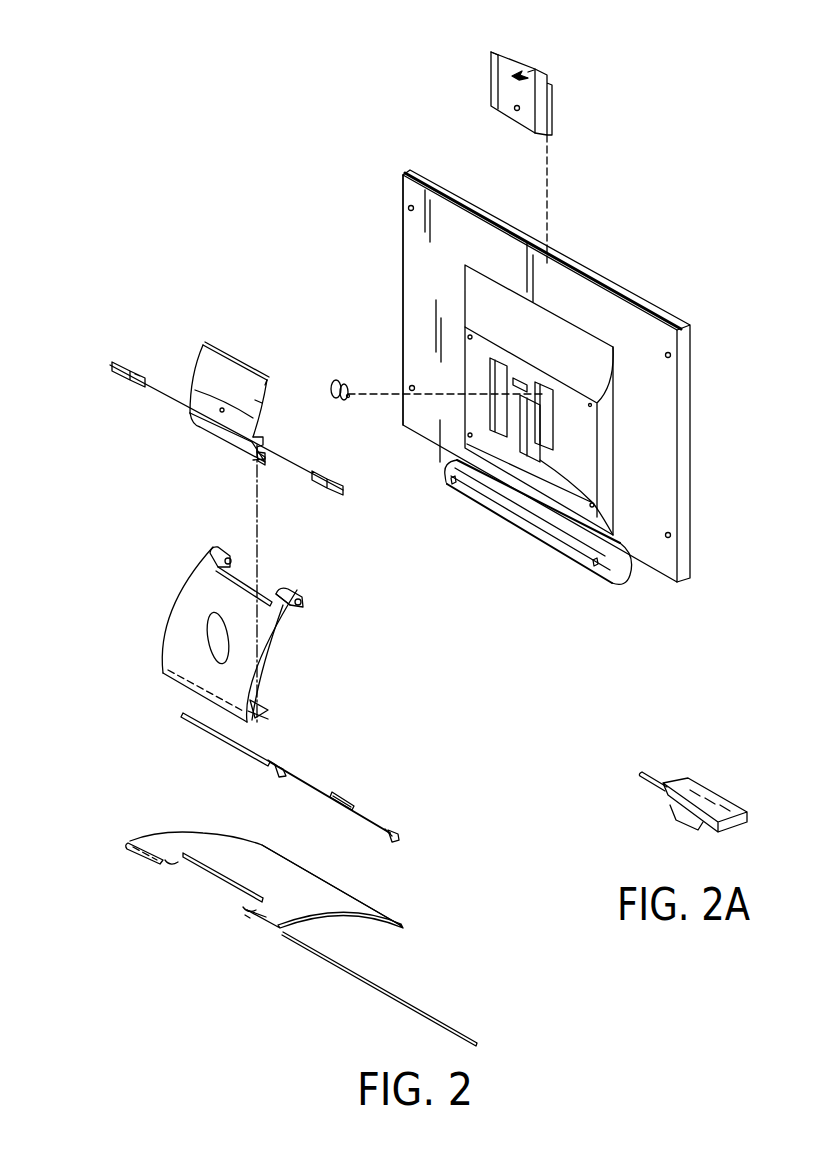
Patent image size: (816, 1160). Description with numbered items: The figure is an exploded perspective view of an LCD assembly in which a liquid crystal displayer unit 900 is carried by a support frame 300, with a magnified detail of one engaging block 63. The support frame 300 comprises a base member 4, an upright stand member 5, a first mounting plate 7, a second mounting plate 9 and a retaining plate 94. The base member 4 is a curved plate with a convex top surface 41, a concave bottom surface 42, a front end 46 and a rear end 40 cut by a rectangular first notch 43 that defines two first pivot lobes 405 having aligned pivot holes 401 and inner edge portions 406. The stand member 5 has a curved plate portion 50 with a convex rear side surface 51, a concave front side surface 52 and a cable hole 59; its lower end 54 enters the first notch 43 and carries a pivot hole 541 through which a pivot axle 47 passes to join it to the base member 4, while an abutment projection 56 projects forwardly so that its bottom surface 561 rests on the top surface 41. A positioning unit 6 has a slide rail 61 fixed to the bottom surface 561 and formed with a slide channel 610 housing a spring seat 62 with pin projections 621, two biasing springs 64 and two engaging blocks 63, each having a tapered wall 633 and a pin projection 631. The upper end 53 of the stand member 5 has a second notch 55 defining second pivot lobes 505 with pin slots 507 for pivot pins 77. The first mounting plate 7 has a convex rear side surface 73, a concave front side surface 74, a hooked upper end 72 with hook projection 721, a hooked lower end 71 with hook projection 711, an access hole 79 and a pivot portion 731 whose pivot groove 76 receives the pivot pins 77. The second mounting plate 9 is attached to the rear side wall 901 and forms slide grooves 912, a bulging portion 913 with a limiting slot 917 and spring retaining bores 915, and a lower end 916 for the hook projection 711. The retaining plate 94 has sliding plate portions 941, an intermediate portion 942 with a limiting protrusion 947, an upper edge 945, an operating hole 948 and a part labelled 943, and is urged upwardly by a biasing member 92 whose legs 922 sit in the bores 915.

In FIG. 2, the base member 4 is at (418, 944).
In FIG. 2, the rear end 40 is at (135, 851).
In FIG. 2, the convex top surface 41 is at (228, 835).
In FIG. 2, the concave bottom surface 42 is at (340, 918).
In FIG. 2, the first notch 43 is at (195, 885).
In FIG. 2, the front end 46 is at (380, 905).
In FIG. 2, the pivot axle 47 is at (381, 990).
In FIG. 2, the pivot holes 401 is at (247, 917).
In FIG. 2, the first pivot lobes 405 is at (265, 917).
In FIG. 2, the inner edge portions 406 is at (240, 900).
In FIG. 2, the stand member 5 is at (167, 604).
In FIG. 2, the curved plate portion 50 is at (270, 640).
In FIG. 2, the convex rear side surface 51 is at (205, 580).
In FIG. 2, the concave front side surface 52 is at (263, 665).
In FIG. 2, the upper end 53 is at (285, 590).
In FIG. 2, the lower end 54 is at (178, 690).
In FIG. 2, the second notch 55 is at (262, 592).
In FIG. 2, the abutment projection 56 is at (266, 705).
In FIG. 2, the cable hole 59 is at (208, 636).
In FIG. 2, the second pivot lobes 505 is at (190, 533).
In FIG. 2, the pin slots 507 is at (301, 600).
In FIG. 2, the pivot hole 541 is at (168, 684).
In FIG. 2, the bottom surface 561 is at (262, 713).
In FIG. 2, the support frame 300 is at (112, 646).
In FIG. 2, the positioning unit 6 is at (352, 785).
In FIG. 2, the slide rail 61 is at (230, 738).
In FIG. 2, the spring seat 62 is at (352, 803).
In FIG. 2, the engaging blocks 63 is at (400, 836).
In FIG. 2A, the engaging blocks 63 is at (708, 801).
In FIG. 2, the biasing springs 64 is at (365, 820).
In FIG. 2, the slide channel 610 is at (271, 768).
In FIG. 2, the pin projection 621 is at (350, 815).
In FIG. 2, the pin projection 631 is at (392, 840).
In FIG. 2A, the pin projection 631 is at (645, 781).
In FIG. 2A, the tapered wall 633 is at (703, 831).
In FIG. 2, the first mounting plate 7 is at (198, 341).
In FIG. 2, the hooked lower end 71 is at (224, 446).
In FIG. 2, the hooked upper end 72 is at (222, 364).
In FIG. 2, the convex rear side surface 73 is at (208, 378).
In FIG. 2, the concave front side surface 74 is at (258, 404).
In FIG. 2, the pivot groove 76 is at (262, 448).
In FIG. 2, the pivot pins 77 is at (128, 372).
In FIG. 2, the access hole 79 is at (219, 412).
In FIG. 2, the forward hook projection 711 is at (266, 462).
In FIG. 2, the forward hook projection 721 is at (268, 381).
In FIG. 2, the pivot portion 731 is at (210, 432).
In FIG. 2, the second mounting plate 9 is at (553, 433).
In FIG. 2, the liquid crystal displayer unit 900 is at (577, 265).
In FIG. 2, the rear side wall 901 is at (410, 237).
In FIG. 2, the slide grooves 912 is at (492, 358).
In FIG. 2, the bulging portion 913 is at (525, 410).
In FIG. 2, the spring retaining bores 915 is at (530, 399).
In FIG. 2, the lower end 916 is at (594, 505).
In FIG. 2, the limiting slot 917 is at (517, 378).
In FIG. 2, the biasing member 92 is at (333, 383).
In FIG. 2, the legs 922 is at (347, 390).
In FIG. 2, the retaining plate 94 is at (611, 88).
In FIG. 2, the sliding plate portions 941 is at (552, 112).
In FIG. 2, the intermediate portion 942 is at (516, 98).
In FIG. 2, the corner 943 is at (494, 53).
In FIG. 2, the upper edge 945 is at (521, 70).
In FIG. 2, the limiting protrusion 947 is at (530, 72).
In FIG. 2, the operating hole 948 is at (514, 111).